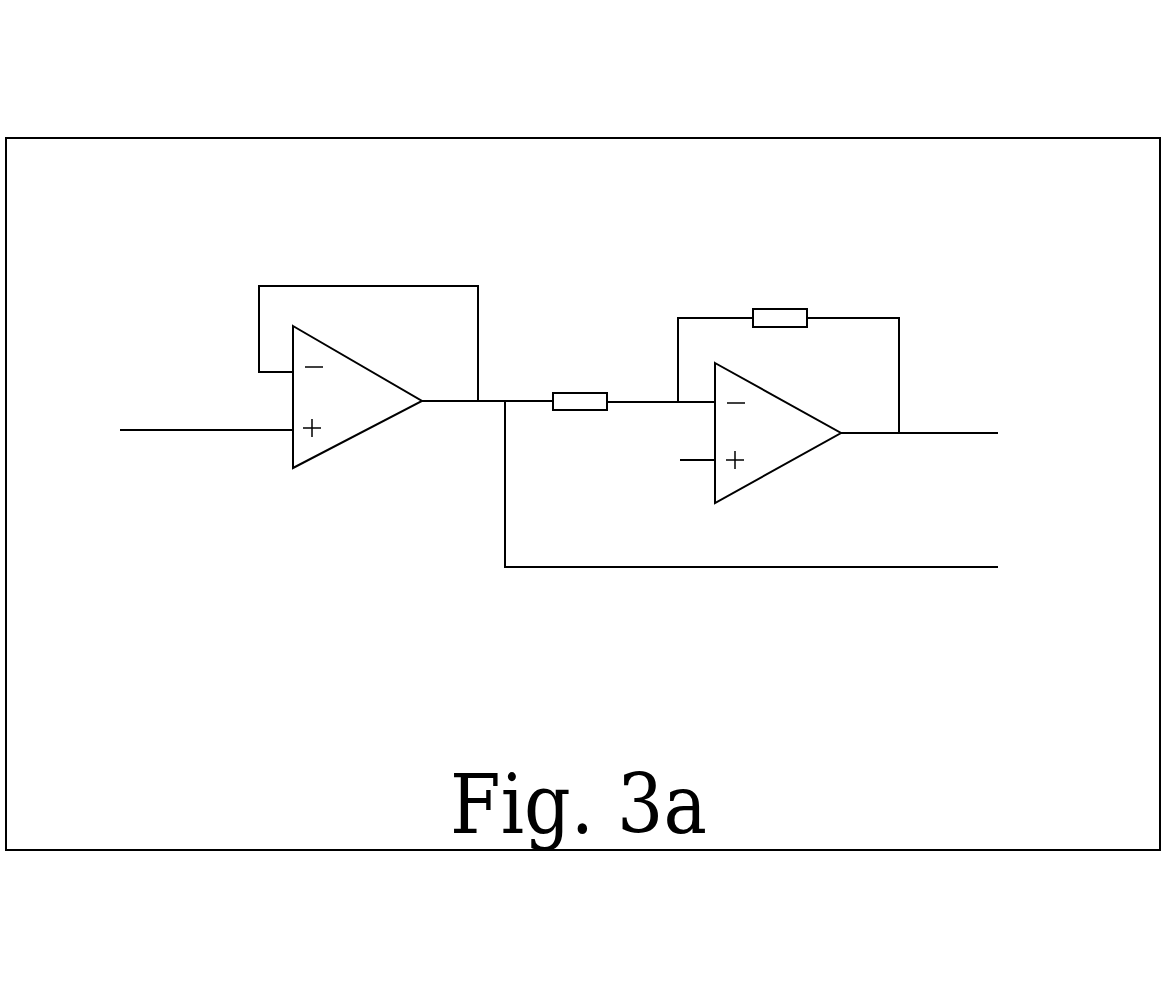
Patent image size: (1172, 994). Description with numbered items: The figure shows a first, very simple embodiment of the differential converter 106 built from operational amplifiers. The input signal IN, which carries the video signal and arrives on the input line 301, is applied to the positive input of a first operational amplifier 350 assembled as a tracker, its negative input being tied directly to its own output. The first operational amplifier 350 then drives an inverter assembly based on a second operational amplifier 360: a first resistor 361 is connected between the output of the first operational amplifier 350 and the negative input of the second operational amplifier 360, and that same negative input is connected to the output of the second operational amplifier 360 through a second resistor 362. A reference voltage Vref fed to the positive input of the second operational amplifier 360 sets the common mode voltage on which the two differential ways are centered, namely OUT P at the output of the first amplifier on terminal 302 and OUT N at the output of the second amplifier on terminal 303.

The differential converter 106 is at (1050, 138).
The input signal line IN 301 is at (217, 438).
The terminal 302 is at (917, 569).
The terminal 303 is at (938, 430).
The first operational amplifier 350 is at (325, 455).
The second operational amplifier 360 is at (788, 467).
The first resistor 361 is at (582, 393).
The second resistor 362 is at (800, 308).